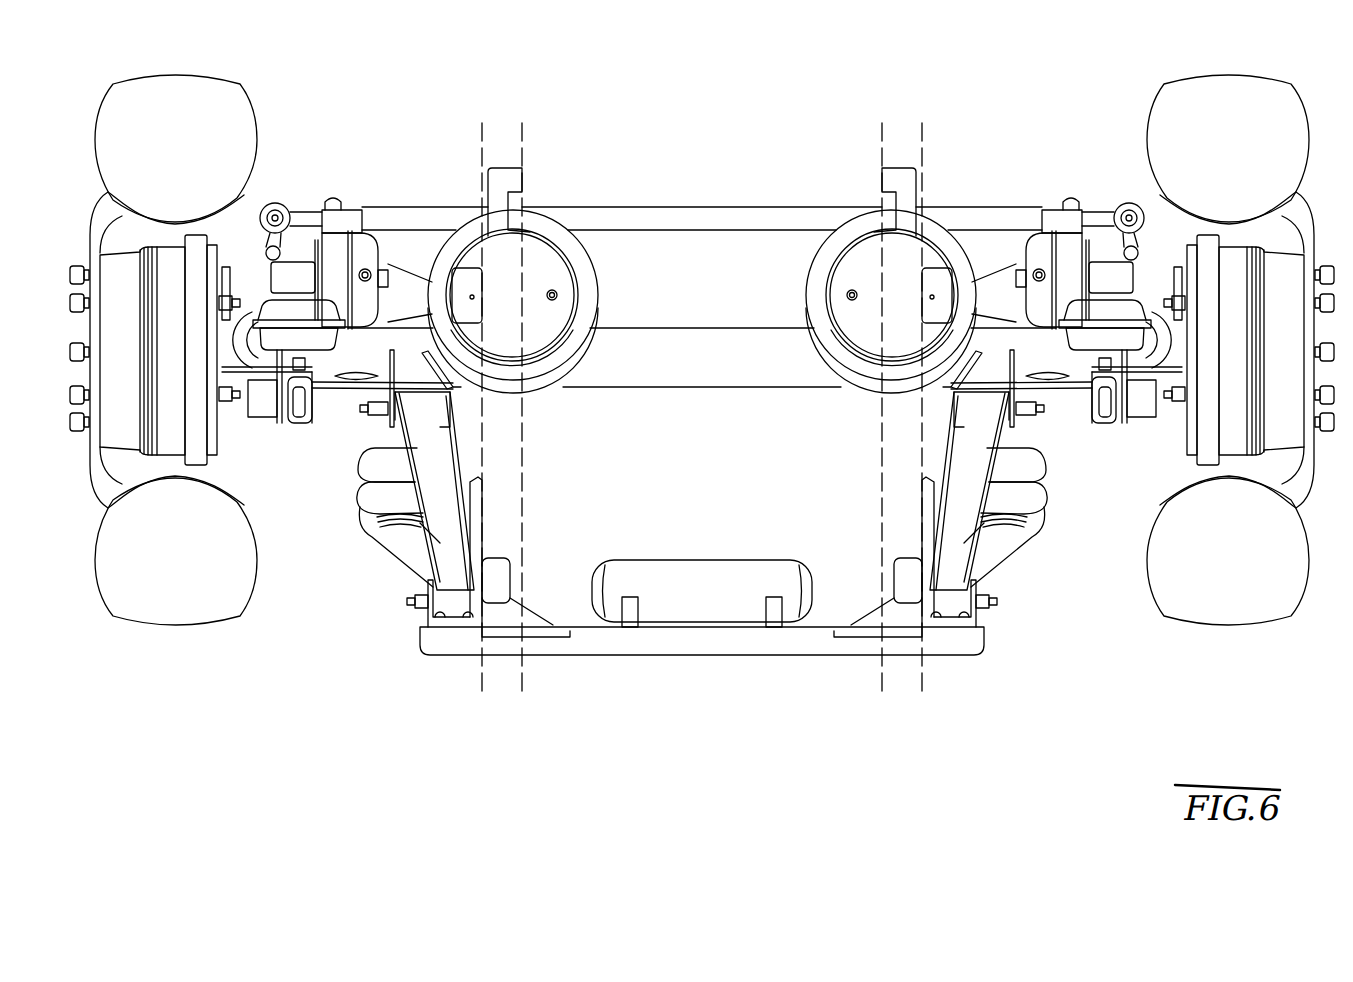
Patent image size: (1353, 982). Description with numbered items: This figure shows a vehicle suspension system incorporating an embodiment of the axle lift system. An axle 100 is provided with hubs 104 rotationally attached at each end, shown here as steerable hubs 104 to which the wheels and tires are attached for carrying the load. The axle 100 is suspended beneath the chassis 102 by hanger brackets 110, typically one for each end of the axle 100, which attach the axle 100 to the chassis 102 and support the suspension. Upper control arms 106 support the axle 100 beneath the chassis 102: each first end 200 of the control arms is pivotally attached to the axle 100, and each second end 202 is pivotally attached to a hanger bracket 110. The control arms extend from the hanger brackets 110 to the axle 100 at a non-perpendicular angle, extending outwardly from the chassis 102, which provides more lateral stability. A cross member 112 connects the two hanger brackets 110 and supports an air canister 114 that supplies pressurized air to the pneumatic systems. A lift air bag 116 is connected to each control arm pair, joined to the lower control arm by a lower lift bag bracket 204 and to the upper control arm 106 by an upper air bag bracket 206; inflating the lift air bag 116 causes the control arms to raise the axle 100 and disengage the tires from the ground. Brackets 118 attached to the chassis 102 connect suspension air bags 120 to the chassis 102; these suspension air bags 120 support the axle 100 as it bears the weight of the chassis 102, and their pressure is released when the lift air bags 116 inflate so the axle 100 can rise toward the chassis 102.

The axle 100 is at (688, 373).
The chassis 102 is at (880, 470).
The hubs 104 is at (193, 260).
The upper control arms 106 is at (932, 496).
The hanger brackets 110 is at (426, 623).
The cross member 112 is at (752, 647).
The air canister 114 is at (712, 578).
The lift air bag 116 is at (368, 522).
The brackets 118 is at (870, 252).
The suspension air bags 120 is at (817, 247).
The first end 200 is at (412, 403).
The second end 202 is at (458, 590).
The lower lift bag bracket 204 is at (407, 550).
The upper air bag bracket 206 is at (407, 457).